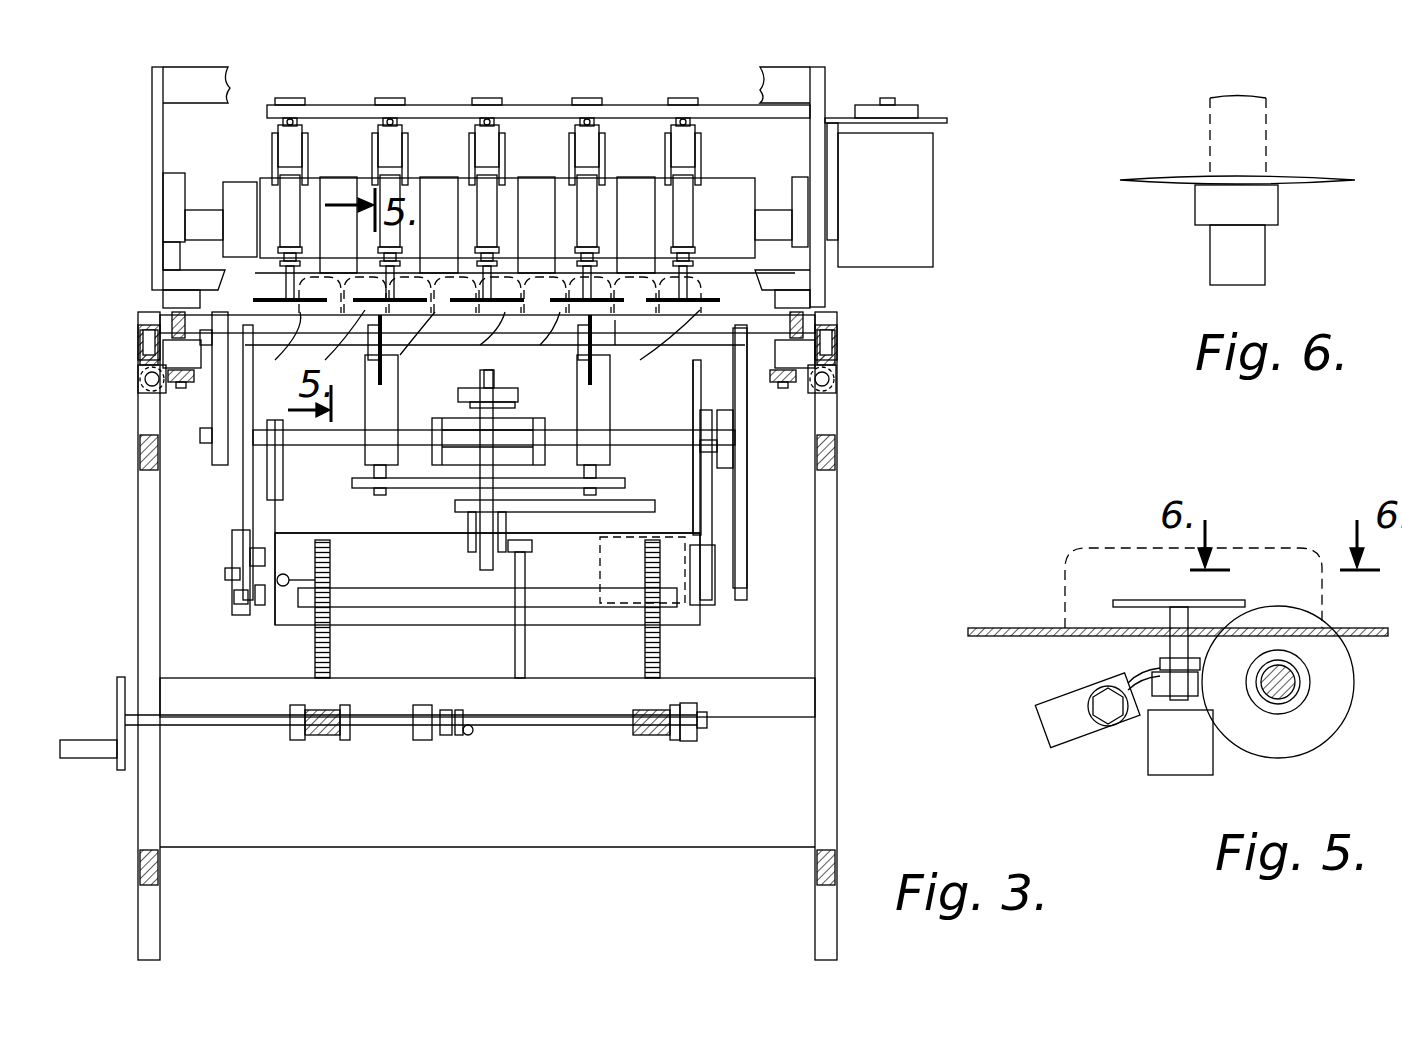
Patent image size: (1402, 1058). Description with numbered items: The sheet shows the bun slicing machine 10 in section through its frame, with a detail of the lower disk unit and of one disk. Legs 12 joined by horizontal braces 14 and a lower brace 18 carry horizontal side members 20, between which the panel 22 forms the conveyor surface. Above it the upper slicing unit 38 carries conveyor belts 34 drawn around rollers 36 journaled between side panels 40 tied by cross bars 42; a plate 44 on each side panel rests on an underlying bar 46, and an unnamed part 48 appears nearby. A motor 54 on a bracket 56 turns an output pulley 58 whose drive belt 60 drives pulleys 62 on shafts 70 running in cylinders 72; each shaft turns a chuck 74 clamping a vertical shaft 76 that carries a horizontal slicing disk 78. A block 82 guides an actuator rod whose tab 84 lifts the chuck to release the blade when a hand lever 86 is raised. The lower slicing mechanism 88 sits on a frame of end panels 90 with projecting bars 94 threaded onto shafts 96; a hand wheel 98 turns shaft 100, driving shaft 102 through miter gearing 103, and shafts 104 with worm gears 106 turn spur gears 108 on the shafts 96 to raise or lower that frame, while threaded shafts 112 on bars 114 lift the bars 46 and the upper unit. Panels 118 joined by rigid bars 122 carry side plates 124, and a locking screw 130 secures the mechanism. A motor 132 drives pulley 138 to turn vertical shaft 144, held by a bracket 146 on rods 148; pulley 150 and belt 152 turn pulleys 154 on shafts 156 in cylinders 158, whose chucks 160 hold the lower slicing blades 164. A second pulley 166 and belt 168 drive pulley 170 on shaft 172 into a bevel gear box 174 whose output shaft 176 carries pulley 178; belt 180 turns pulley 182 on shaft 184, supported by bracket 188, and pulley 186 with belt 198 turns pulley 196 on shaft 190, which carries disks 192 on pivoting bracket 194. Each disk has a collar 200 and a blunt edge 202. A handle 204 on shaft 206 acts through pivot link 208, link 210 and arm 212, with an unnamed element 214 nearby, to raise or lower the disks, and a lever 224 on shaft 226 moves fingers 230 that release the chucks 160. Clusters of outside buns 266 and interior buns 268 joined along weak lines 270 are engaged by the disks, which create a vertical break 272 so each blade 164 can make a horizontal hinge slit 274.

In FIG. 3, the machine 10 is at (950, 360).
In FIG. 3, the legs 12 is at (828, 744).
In FIG. 3, the horizontal braces 14 is at (515, 850).
In FIG. 3, the horizontal brace 18 is at (742, 702).
In FIG. 3, the horizontal side members 20 is at (175, 352).
In FIG. 3, the horizontal panel 22 is at (690, 320).
In FIG. 5, the horizontal panel 22 is at (1362, 628).
In FIG. 3, the belts 34 is at (348, 180).
In FIG. 3, the rollers 36 is at (740, 188).
In FIG. 3, the upper slicing unit 38 is at (148, 190).
In FIG. 3, the side panels 40 is at (155, 110).
In FIG. 3, the cross bars 42 is at (214, 72).
In FIG. 3, the plate 44 is at (175, 278).
In FIG. 3, the bars 46 is at (170, 302).
In FIG. 3, the side block 48 is at (796, 262).
In FIG. 3, the motor 54 is at (930, 190).
In FIG. 3, the bracket 56 is at (945, 120).
In FIG. 3, the output pulley 58 is at (898, 102).
In FIG. 3, the drive belt 60 is at (745, 105).
In FIG. 3, the driven pulleys 62 is at (290, 100).
In FIG. 3, the shafts 70 is at (283, 122).
In FIG. 3, the cylinders 72 is at (272, 160).
In FIG. 3, the chuck 74 is at (285, 252).
In FIG. 3, the vertical shaft 76 is at (285, 285).
In FIG. 3, the circular slicing disk 78 is at (287, 310).
In FIG. 3, the block 82 is at (498, 178).
In FIG. 3, the projecting tab 84 is at (482, 272).
In FIG. 3, the hand lever 86 is at (280, 145).
In FIG. 3, the lower slicing mechanism 88 is at (140, 545).
In FIG. 3, the end panels 90 is at (425, 622).
In FIG. 3, the outwardly projecting bar 94 is at (485, 610).
In FIG. 3, the threaded shafts 96 is at (332, 660).
In FIG. 3, the hand wheel 98 is at (115, 706).
In FIG. 3, the shaft 100 is at (130, 724).
In FIG. 3, the perpendicular shaft 102 is at (470, 740).
In FIG. 3, the miter gearing 103 is at (450, 740).
In FIG. 3, the shafts 104 is at (590, 728).
In FIG. 3, the worm gears 106 is at (325, 736).
In FIG. 3, the spur gears 108 is at (305, 740).
In FIG. 3, the threaded shafts 112 is at (140, 330).
In FIG. 3, the bars 114 is at (140, 385).
In FIG. 3, the panels 118 is at (368, 540).
In FIG. 3, the rigid bars 122 is at (242, 536).
In FIG. 3, the side plates 124 is at (280, 520).
In FIG. 3, the locking screw 130 is at (318, 580).
In FIG. 3, the motor 132 is at (515, 420).
In FIG. 3, the output pulley 138 is at (505, 390).
In FIG. 3, the vertical shaft 144 is at (480, 404).
In FIG. 3, the bracket 146 is at (575, 438).
In FIG. 3, the horizontal rods 148 is at (682, 420).
In FIG. 3, the pulley 150 is at (455, 515).
In FIG. 3, the belt 152 is at (615, 500).
In FIG. 3, the pulleys 154 is at (352, 484).
In FIG. 3, the shafts 156 is at (372, 472).
In FIG. 3, the cylinders 158 is at (380, 410).
In FIG. 5, the cylinders 158 is at (1188, 764).
In FIG. 5, the chucks 160 is at (1185, 680).
In FIG. 3, the slicing blades 164 is at (610, 320).
In FIG. 3, the second pulley 166 is at (472, 552).
In FIG. 3, the belt 168 is at (502, 552).
In FIG. 3, the pulley 170 is at (605, 538).
In FIG. 3, the shaft 172 is at (642, 590).
In FIG. 3, the bevel gear box 174 is at (625, 602).
In FIG. 3, the output shaft 176 is at (706, 580).
In FIG. 3, the pulley 178 is at (735, 605).
In FIG. 3, the belt 180 is at (728, 532).
In FIG. 3, the pulley 182 is at (735, 455).
In FIG. 3, the horizontal shaft 184 is at (735, 420).
In FIG. 3, the pulley 186 is at (200, 460).
In FIG. 3, the bracket 188 is at (272, 445).
In FIG. 3, the shaft 190 is at (545, 345).
In FIG. 5, the shaft 190 is at (1285, 682).
In FIG. 6, the shaft 190 is at (1253, 268).
In FIG. 3, the disks 192 is at (385, 365).
In FIG. 5, the disks 192 is at (1325, 730).
In FIG. 6, the disks 192 is at (1283, 178).
In FIG. 3, the bracket 194 is at (232, 384).
In FIG. 3, the pulley 196 is at (185, 386).
In FIG. 3, the belt 198 is at (215, 412).
In FIG. 6, the collar 200 is at (1215, 217).
In FIG. 5, the blunt edge 202 is at (1302, 755).
In FIG. 6, the blunt edge 202 is at (1355, 182).
In FIG. 3, the handle 204 is at (250, 555).
In FIG. 3, the horizontal shaft 206 is at (226, 574).
In FIG. 3, the pivot link 208 is at (248, 605).
In FIG. 3, the link 210 is at (236, 596).
In FIG. 3, the arm 212 is at (248, 500).
In FIG. 3, the pin 214 is at (242, 610).
In FIG. 5, the lever 224 is at (1058, 728).
In FIG. 5, the horizontal shaft 226 is at (1110, 725).
In FIG. 5, the projecting fingers 230 is at (1145, 675).
In FIG. 3, the outside buns 266 is at (322, 290).
In FIG. 3, the interior buns 268 is at (362, 290).
In FIG. 3, the weak lines 270 is at (340, 352).
In FIG. 5, the vertical break 272 is at (1078, 603).
In FIG. 5, the horizontal hinge slit 274 is at (1103, 600).